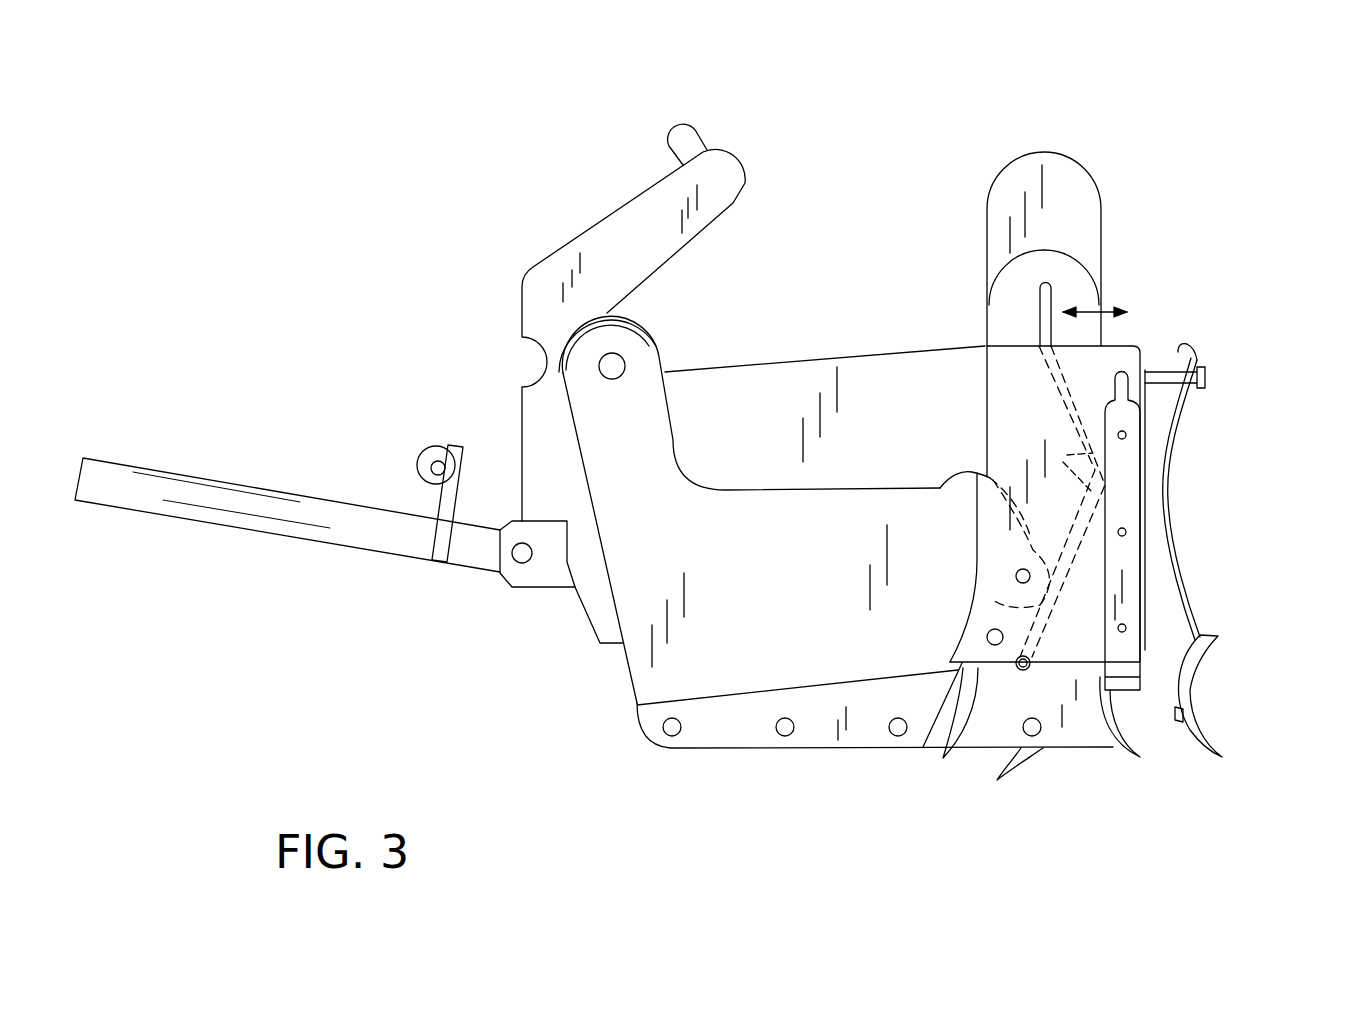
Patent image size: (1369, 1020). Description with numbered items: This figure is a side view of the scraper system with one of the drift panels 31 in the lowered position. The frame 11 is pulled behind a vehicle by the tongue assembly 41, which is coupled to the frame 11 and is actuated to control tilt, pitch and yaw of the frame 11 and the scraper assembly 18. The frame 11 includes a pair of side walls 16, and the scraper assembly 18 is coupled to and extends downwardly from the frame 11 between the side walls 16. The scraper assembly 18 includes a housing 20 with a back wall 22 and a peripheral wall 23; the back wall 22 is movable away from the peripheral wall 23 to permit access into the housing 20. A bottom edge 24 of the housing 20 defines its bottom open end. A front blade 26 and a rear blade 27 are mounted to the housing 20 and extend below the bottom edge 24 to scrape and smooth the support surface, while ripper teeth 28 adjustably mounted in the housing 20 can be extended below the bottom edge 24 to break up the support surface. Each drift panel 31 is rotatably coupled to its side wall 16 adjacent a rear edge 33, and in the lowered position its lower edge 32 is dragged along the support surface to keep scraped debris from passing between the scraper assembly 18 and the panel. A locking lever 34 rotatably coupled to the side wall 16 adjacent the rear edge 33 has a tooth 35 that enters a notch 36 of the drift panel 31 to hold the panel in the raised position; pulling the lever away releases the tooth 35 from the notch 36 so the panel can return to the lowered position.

The frame 11 is at (838, 357).
The side walls 16 is at (898, 378).
The scraper assembly 18 is at (1070, 155).
The housing 20 is at (1077, 205).
The back wall 22 is at (1170, 493).
The peripheral wall 23 is at (1057, 270).
The bottom edge 24 is at (1073, 753).
The front blade 26 is at (957, 743).
The rear blade 27 is at (1193, 698).
The ripper teeth 28 is at (1023, 760).
The drift panels 31 is at (660, 618).
The lower edge 32 is at (677, 750).
The rear edge 33 is at (1040, 535).
The locking levers 34 is at (1043, 303).
The tooth 35 is at (1067, 455).
The notch 36 is at (977, 480).
The tongue assembly 41 is at (243, 491).